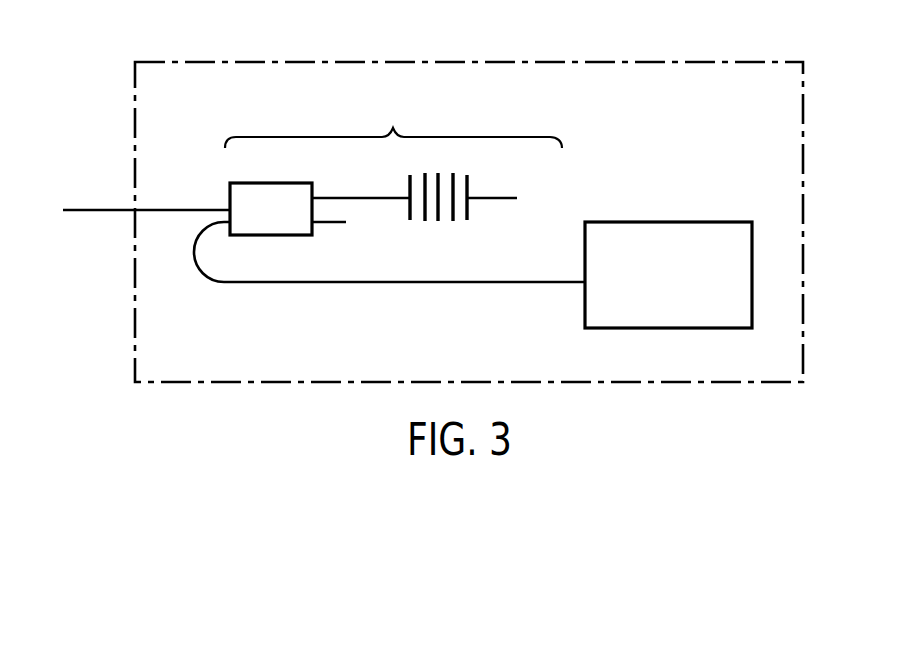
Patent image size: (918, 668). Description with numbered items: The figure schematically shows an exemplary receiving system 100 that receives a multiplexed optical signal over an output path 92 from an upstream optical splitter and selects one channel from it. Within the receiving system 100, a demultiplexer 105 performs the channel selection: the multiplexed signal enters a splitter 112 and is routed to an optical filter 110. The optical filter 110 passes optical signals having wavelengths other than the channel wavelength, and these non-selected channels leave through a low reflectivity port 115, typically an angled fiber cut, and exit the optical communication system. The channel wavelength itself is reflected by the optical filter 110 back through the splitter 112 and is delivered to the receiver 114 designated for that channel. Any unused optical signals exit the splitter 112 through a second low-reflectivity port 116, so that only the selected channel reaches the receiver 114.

The receiving system 100 is at (533, 62).
The output path 92 is at (98, 208).
The splitter 112 is at (300, 181).
The demultiplexer 105 is at (393, 120).
The optical filter 110 is at (466, 182).
The low reflectivity port 115 is at (521, 190).
The low-reflectivity port 116 is at (352, 214).
The receiver 114 is at (690, 221).